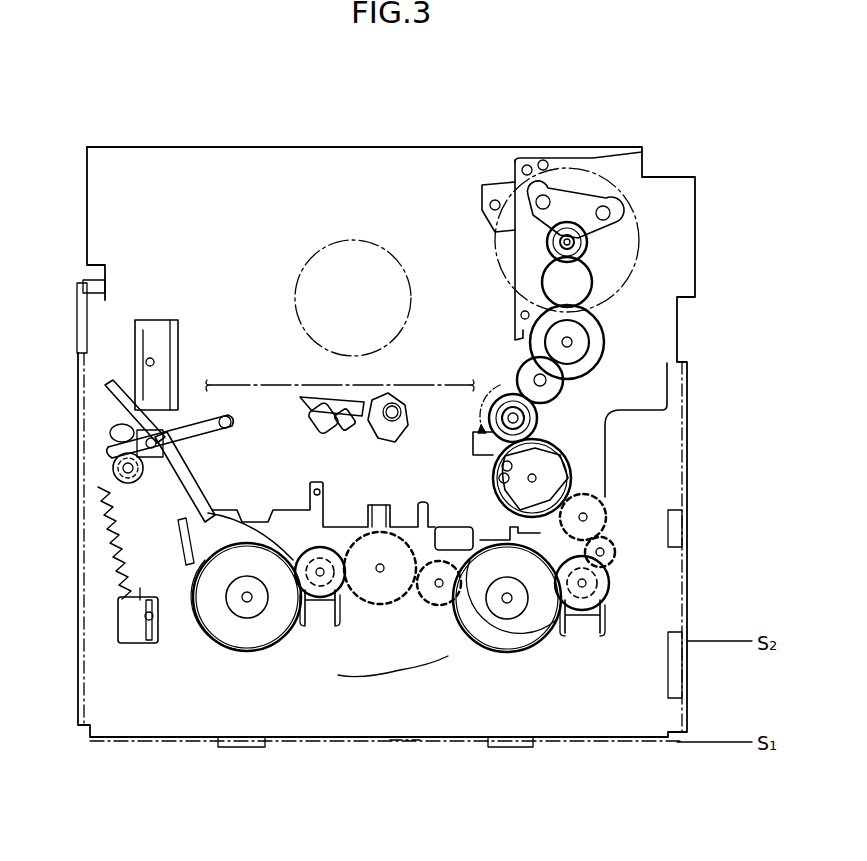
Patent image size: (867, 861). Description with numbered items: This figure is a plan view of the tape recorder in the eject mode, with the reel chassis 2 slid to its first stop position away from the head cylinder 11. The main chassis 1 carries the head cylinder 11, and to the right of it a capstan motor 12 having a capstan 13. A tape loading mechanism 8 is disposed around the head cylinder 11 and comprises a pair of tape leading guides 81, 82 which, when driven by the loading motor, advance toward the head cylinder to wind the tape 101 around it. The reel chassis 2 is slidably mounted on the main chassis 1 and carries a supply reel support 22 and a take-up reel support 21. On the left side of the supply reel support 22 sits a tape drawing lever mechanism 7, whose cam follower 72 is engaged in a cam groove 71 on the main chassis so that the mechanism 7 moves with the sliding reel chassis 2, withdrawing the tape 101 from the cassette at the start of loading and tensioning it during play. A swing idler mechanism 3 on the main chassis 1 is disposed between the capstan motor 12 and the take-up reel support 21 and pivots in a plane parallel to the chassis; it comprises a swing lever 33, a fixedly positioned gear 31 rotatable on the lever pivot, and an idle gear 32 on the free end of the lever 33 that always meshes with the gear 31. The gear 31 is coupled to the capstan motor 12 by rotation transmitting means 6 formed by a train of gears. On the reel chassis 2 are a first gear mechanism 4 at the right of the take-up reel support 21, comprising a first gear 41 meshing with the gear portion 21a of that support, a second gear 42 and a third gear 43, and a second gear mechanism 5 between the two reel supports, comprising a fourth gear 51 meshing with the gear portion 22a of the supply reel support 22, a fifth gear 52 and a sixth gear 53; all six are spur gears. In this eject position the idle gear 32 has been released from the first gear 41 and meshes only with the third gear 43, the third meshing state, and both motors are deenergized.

The main chassis 1 is at (488, 172).
The reel chassis 2 is at (608, 705).
The swing idler mechanism 3 is at (494, 503).
The fixedly positioned gear 31 is at (540, 420).
The idle gear 32 is at (558, 458).
The swing lever 33 is at (540, 460).
The first gear mechanism 4 is at (612, 541).
The first gear 41 is at (606, 592).
The second gear 42 is at (616, 556).
The third gear 43 is at (598, 500).
The second gear mechanism 5 is at (393, 678).
The fourth gear 51 is at (332, 605).
The fifth gear 52 is at (376, 604).
The sixth gear 53 is at (437, 605).
The rotation transmitting means 6 is at (604, 371).
The tape drawing lever mechanism 7 is at (118, 405).
The cam groove 71 is at (132, 437).
The cam follower 72 is at (143, 478).
The tape loading mechanism 8 is at (360, 440).
The tape leading guide 81 is at (398, 432).
The tape leading guide 82 is at (322, 430).
The head cylinder 11 is at (370, 246).
The capstan motor 12 is at (605, 188).
The capstan 13 is at (590, 236).
The take-up reel support 21 is at (500, 638).
The gear portion 21a is at (545, 625).
The supply reel support 22 is at (236, 635).
The gear portion 22a is at (205, 630).
The tape 101 is at (253, 383).